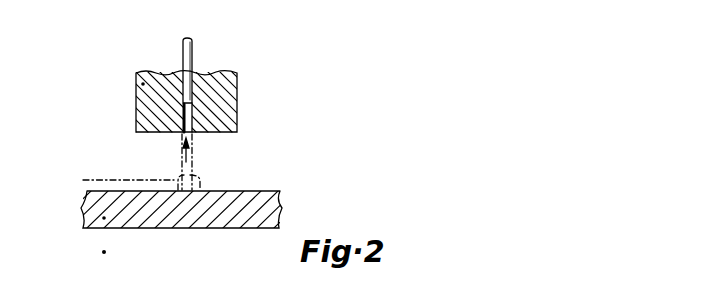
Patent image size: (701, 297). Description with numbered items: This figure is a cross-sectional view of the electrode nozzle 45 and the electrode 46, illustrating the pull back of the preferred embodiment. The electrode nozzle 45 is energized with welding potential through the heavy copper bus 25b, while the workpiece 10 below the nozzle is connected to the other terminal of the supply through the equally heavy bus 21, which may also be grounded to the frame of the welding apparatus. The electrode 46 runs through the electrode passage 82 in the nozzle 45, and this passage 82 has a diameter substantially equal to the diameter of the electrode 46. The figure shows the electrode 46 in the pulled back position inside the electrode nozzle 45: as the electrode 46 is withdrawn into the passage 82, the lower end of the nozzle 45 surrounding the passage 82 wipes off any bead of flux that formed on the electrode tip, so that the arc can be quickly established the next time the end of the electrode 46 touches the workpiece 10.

The workpiece 10 is at (282, 211).
The bus 21 is at (37, 252).
The bus 25b is at (105, 84).
The electrode nozzle 45 is at (238, 88).
The electrode 46 is at (192, 56).
The electrode passage 82 is at (181, 121).